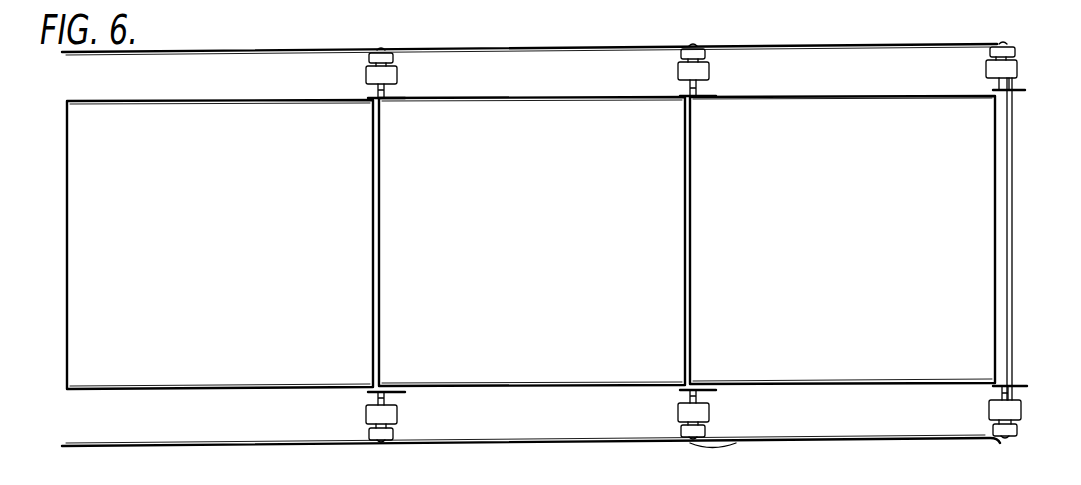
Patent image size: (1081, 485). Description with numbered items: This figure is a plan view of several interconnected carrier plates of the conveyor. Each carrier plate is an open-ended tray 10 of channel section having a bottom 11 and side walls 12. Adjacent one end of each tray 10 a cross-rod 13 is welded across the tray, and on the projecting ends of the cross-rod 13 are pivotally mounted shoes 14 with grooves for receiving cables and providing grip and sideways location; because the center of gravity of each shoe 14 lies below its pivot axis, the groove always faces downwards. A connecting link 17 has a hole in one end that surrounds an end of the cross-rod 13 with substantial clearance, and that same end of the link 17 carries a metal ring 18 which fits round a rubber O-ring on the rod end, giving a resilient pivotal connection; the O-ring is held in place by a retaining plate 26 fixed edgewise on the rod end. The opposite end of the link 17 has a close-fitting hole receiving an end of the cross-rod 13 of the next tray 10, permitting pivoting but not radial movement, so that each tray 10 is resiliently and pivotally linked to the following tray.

The tray 10 is at (188, 391).
The bottom 11 is at (838, 225).
The side wall 12 is at (842, 96).
The cross-rod 13 is at (676, 94).
The shoe 14 is at (366, 72).
The connecting link 17 is at (515, 25).
The metal ring 18 is at (706, 58).
The retaining plate 26 is at (1005, 42).